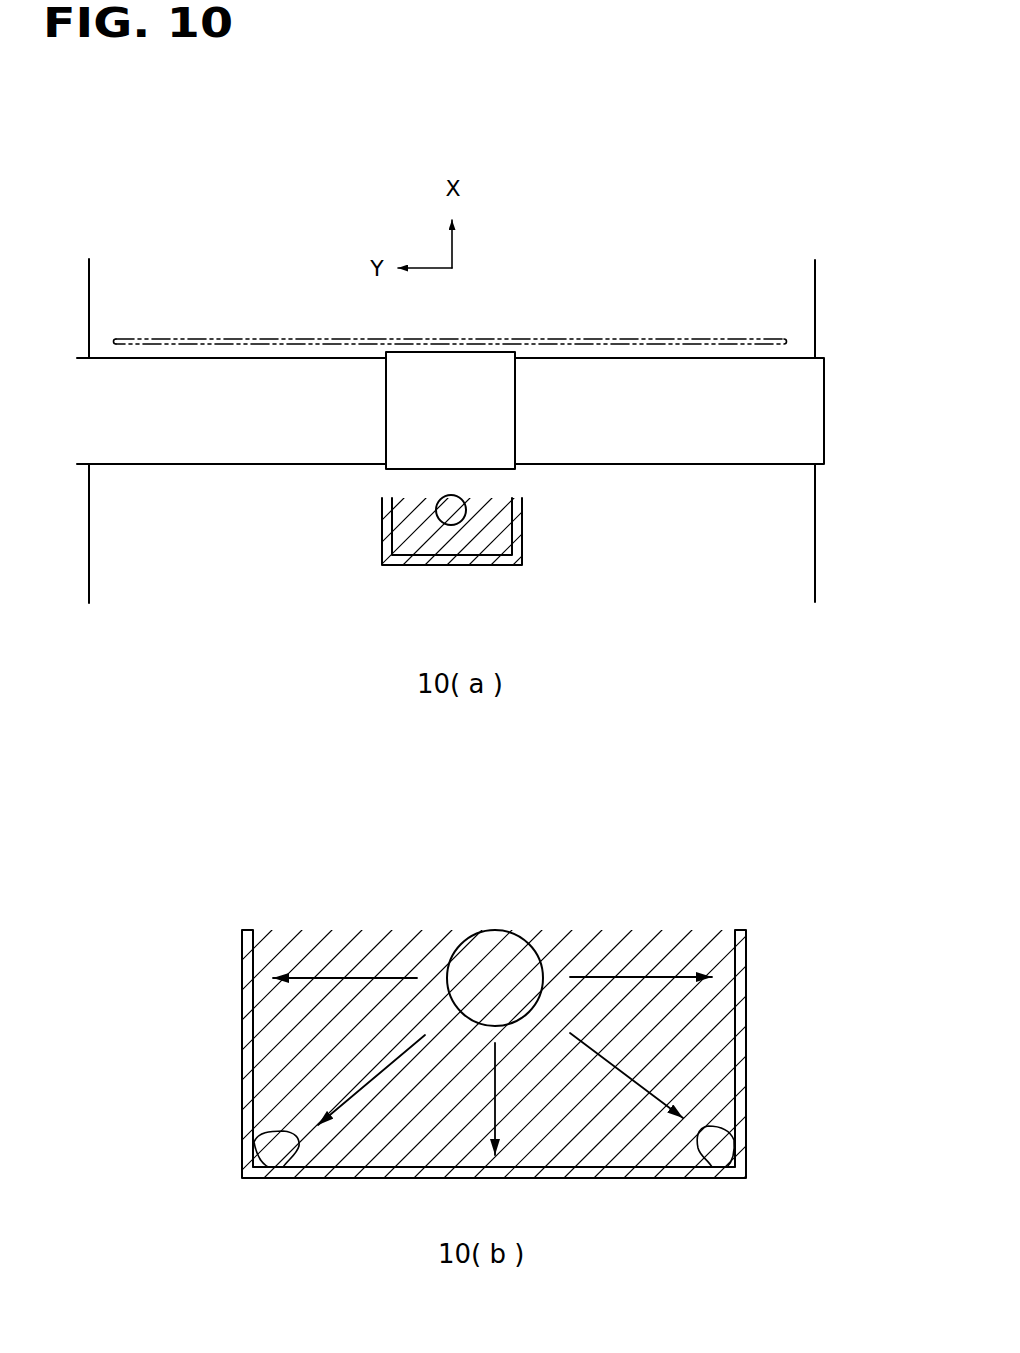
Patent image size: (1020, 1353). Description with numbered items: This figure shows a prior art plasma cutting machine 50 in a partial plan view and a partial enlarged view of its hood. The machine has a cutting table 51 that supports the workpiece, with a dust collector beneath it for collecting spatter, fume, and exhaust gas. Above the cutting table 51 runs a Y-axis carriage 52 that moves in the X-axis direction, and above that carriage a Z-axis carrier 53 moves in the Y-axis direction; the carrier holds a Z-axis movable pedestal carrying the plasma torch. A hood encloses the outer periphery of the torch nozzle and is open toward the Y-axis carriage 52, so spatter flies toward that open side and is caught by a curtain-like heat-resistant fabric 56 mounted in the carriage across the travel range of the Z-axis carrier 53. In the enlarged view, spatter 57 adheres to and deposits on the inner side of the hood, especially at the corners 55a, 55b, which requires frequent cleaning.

The plasma cutting machine 50 is at (717, 288).
The cutting table 51 is at (770, 562).
The Y-axis carriage 52 is at (798, 408).
The Z-axis carrier 53 is at (503, 407).
The corner 55a is at (270, 1166).
The corner 55b is at (730, 1172).
The heat-resistant fabric 56 is at (548, 337).
The spatter 57 is at (273, 1145).